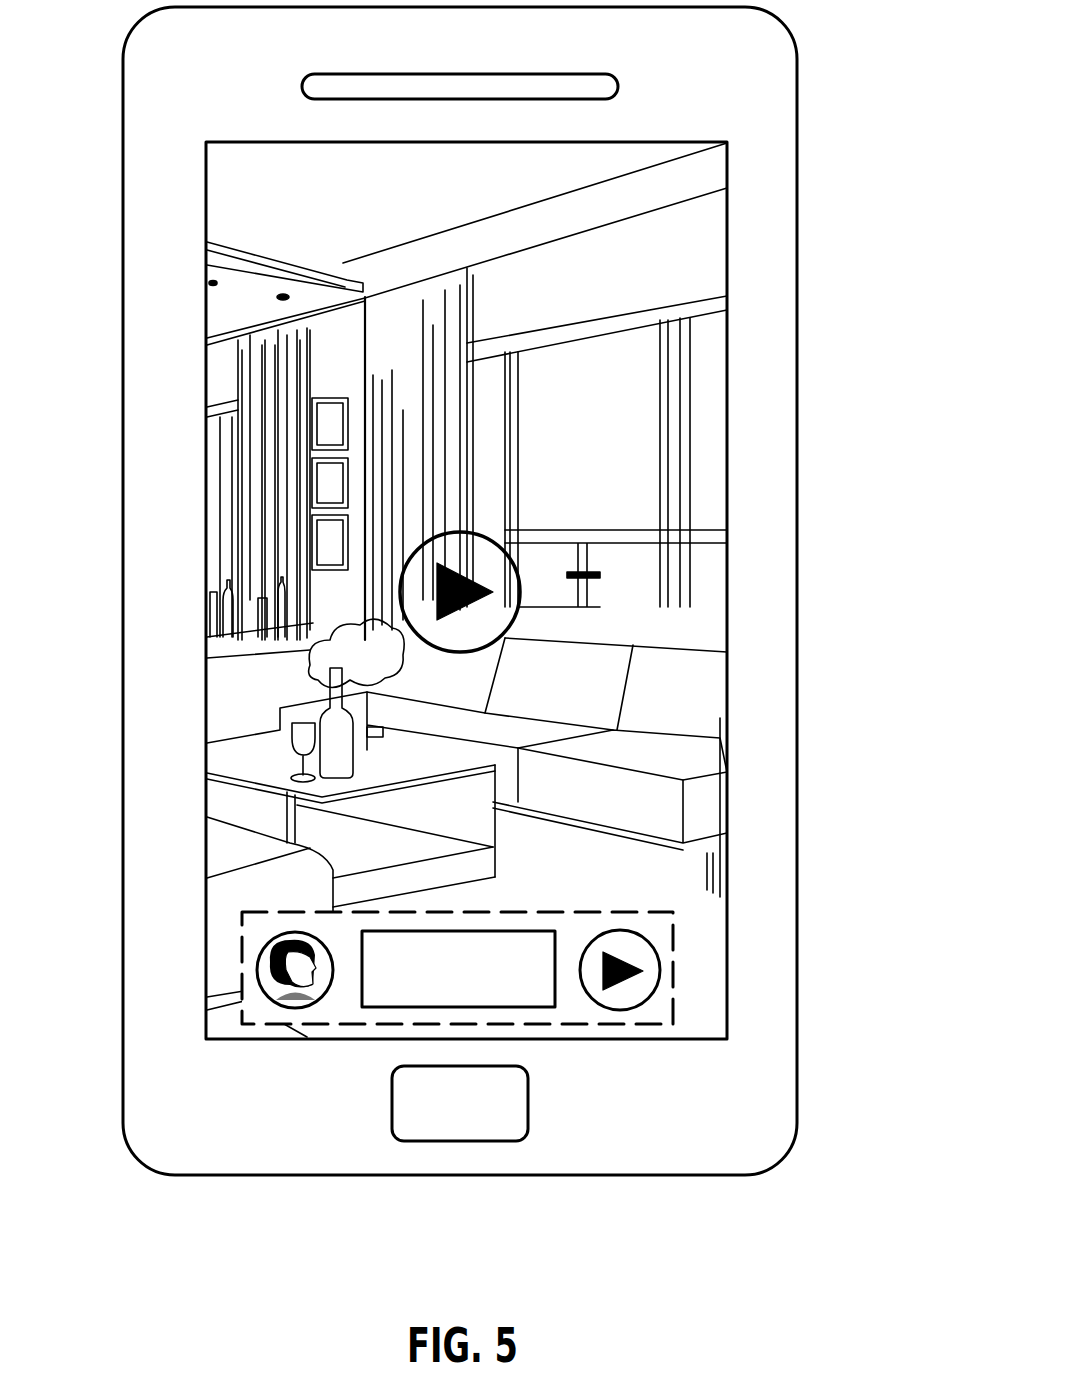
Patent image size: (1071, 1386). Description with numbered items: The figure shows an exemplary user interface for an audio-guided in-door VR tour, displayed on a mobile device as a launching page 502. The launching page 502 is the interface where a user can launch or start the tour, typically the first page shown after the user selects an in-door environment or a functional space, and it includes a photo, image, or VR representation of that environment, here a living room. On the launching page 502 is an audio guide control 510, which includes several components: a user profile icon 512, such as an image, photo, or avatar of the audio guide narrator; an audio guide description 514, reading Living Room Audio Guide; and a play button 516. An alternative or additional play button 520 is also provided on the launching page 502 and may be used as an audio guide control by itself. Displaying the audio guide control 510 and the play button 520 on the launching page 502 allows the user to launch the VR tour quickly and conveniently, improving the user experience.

The launching page 502 is at (727, 165).
The audio guide control 510 is at (672, 952).
The user profile icon 512 is at (255, 969).
The audio guide description 514 is at (362, 1007).
The play button 516 is at (637, 1008).
The play button 520 is at (522, 602).